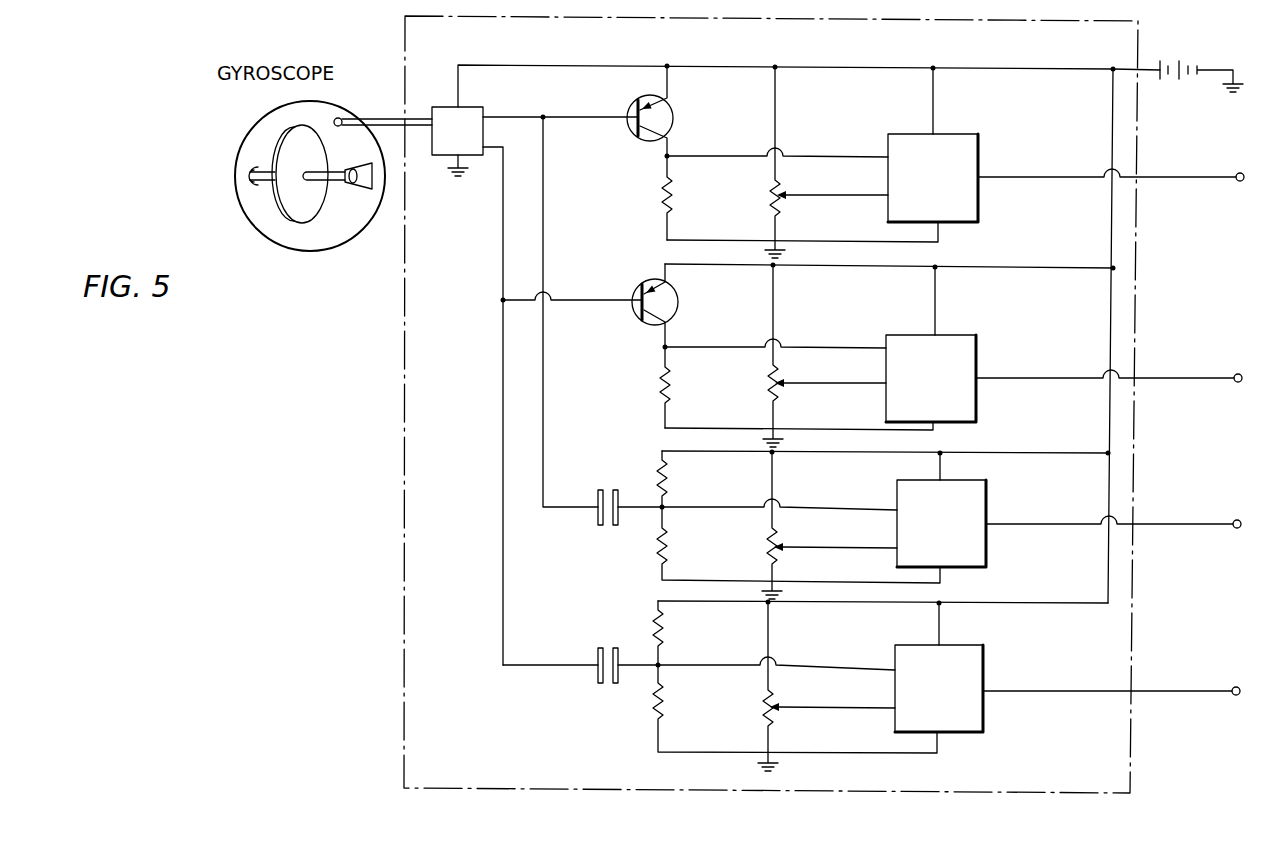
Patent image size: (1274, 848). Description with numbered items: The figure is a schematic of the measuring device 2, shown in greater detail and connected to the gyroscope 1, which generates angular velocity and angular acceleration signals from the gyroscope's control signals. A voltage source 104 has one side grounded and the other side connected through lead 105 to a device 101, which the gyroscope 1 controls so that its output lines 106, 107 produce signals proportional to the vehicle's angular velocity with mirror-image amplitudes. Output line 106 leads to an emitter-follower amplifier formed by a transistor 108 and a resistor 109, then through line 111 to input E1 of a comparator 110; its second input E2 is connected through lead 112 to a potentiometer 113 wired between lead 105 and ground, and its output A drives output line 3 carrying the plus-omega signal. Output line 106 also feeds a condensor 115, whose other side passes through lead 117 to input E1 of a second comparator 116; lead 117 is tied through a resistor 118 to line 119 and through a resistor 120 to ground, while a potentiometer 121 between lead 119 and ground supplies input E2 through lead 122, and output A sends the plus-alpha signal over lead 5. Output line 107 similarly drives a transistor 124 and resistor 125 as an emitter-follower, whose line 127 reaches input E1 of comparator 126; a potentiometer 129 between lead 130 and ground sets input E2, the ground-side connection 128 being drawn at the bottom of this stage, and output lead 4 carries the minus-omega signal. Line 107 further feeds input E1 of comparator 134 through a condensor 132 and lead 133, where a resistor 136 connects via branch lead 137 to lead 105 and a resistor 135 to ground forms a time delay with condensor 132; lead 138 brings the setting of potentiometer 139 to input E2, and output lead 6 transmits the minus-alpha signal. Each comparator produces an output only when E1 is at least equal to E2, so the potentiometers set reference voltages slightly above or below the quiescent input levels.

The gyroscope 1 is at (306, 205).
The measuring device 2 is at (388, 432).
The output line 3 is at (1175, 177).
The output lead 4 is at (1170, 378).
The lead 5 is at (1165, 524).
The output lead 6 is at (1158, 691).
The device 101 is at (442, 155).
The voltage source 104 is at (1178, 80).
The lead 105 is at (616, 66).
The output line 106 is at (522, 114).
The output line 107 is at (494, 147).
The transistor 108 is at (640, 134).
The resistor 109 is at (660, 199).
The comparator 110 is at (975, 135).
The line 111 is at (815, 156).
The lead 112 is at (826, 196).
The potentiometer 113 is at (768, 197).
The condensor 115 is at (600, 493).
The second comparator 116 is at (980, 505).
The lead 117 is at (697, 507).
The resistor 118 is at (660, 475).
The line 119 is at (935, 452).
The resistor 120 is at (657, 548).
The potentiometer 121 is at (768, 540).
The lead 122 is at (820, 547).
The transistor 124 is at (632, 312).
The resistor 125 is at (660, 390).
The first comparator 126 is at (975, 360).
The line 127 is at (808, 347).
The ground lead 128 is at (795, 428).
The potentiometer 129 is at (768, 385).
The lead 130 is at (990, 265).
The condensor 132 is at (598, 650).
The lead 133 is at (790, 665).
The comparator 134 is at (983, 668).
The resistor 135 is at (653, 688).
The resistor 136 is at (654, 632).
The branch lead 137 is at (1020, 603).
The lead 138 is at (810, 712).
The potentiometer 139 is at (760, 708).